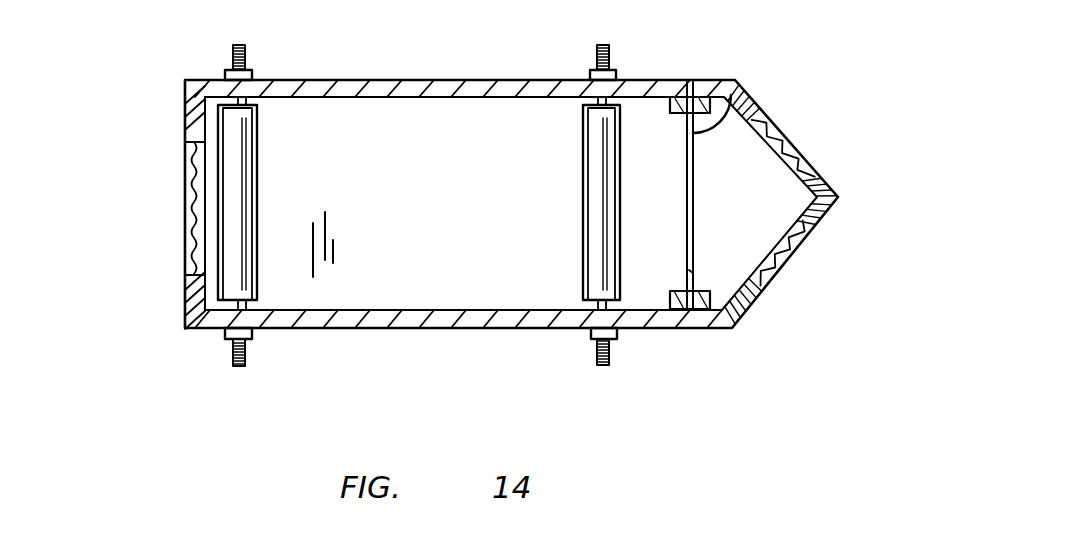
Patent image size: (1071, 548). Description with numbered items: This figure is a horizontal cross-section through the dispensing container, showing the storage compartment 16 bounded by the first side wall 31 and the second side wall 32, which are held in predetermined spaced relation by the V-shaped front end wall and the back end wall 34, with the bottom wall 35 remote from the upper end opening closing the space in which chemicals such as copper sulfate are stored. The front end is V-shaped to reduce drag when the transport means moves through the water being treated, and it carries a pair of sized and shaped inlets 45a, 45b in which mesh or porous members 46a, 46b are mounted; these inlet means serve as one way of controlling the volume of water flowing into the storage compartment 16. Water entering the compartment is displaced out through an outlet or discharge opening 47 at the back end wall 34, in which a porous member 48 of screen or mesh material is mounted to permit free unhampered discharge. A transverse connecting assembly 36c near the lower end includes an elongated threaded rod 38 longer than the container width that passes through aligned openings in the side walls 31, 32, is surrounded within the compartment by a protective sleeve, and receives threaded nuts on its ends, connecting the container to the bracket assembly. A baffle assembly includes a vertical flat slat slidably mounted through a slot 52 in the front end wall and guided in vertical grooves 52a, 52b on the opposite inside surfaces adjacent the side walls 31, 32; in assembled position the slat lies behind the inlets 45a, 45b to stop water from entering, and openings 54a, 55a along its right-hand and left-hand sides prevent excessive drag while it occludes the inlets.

The storage compartment 16 is at (345, 106).
The first side wall 31 is at (450, 318).
The second side wall 32 is at (447, 80).
The back end wall 34 is at (143, 208).
The bottom wall 35 is at (342, 253).
The transverse connecting assembly 36c is at (264, 180).
The elongated threaded rod 38 is at (597, 347).
The inlet 45a is at (780, 130).
The inlet 45b is at (808, 232).
The mesh or porous member 46a is at (797, 154).
The mesh or porous member 46b is at (786, 258).
The outlet or discharge opening 47 is at (185, 145).
The porous member 48 is at (188, 205).
The slot 52 is at (697, 190).
The vertical groove 52a is at (695, 80).
The vertical groove 52b is at (693, 309).
The opening 54a is at (740, 86).
The opening 55a is at (695, 273).